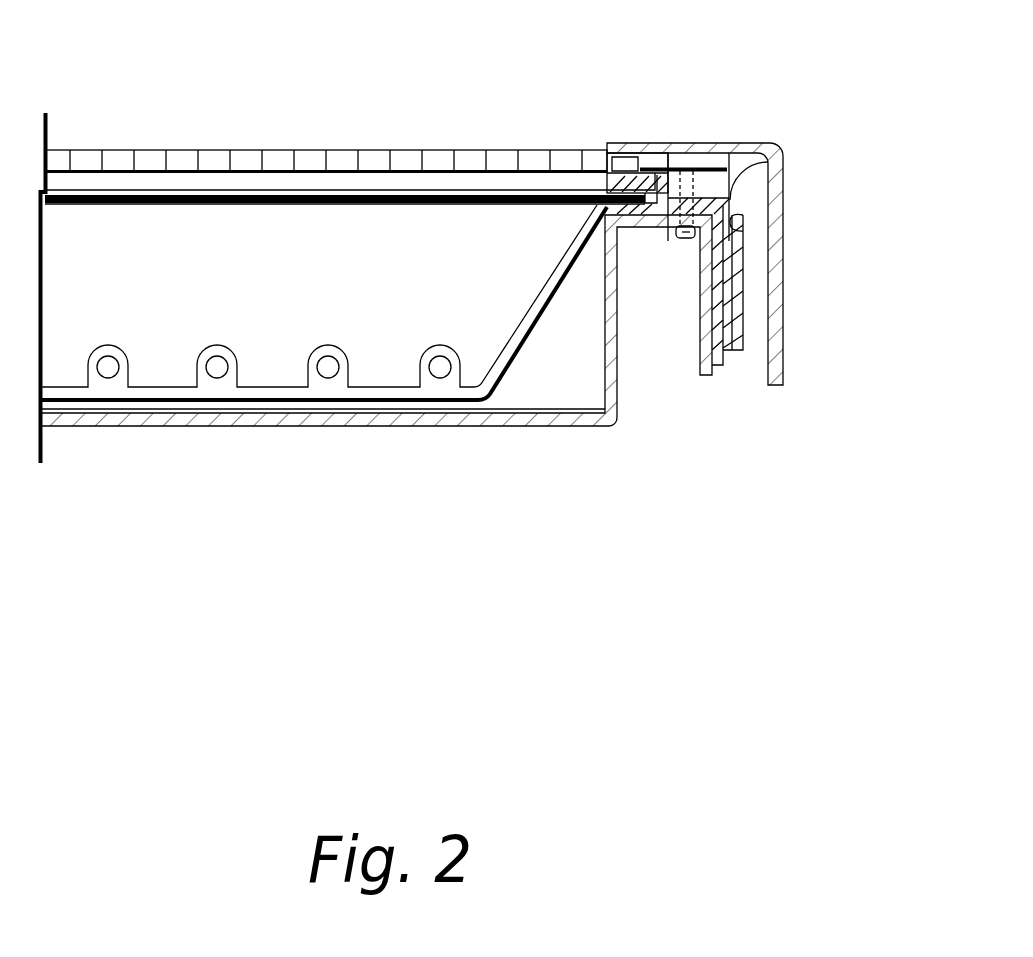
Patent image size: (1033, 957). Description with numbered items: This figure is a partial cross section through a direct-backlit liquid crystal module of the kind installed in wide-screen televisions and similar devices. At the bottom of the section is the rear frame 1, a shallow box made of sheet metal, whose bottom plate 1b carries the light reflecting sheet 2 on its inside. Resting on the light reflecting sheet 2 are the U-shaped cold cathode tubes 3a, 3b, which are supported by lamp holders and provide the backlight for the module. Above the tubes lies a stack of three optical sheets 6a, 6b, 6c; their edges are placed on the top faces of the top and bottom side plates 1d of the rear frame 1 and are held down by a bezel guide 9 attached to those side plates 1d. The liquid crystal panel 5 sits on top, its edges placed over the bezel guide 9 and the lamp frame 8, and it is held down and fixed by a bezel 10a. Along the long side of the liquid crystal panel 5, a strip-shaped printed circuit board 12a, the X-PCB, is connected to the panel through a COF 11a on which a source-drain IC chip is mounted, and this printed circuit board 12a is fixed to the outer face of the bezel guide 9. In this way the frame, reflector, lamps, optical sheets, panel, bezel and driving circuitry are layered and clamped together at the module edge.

The rear frame 1 is at (377, 324).
The bottom plate 1b is at (538, 412).
The top and bottom side plates 1d is at (619, 343).
The light reflecting sheet 2 is at (400, 410).
The U-shaped cold cathode tube 3a is at (329, 405).
The U-shaped cold cathode tube 3b is at (217, 378).
The liquid crystal panel 5 is at (277, 150).
The optical sheet 6a is at (193, 205).
The optical sheet 6b is at (147, 190).
The optical sheet 6c is at (88, 190).
The lamp frame 8 is at (403, 237).
The bezel guide 9 is at (650, 175).
The bezel 10a is at (752, 143).
The COF (chip-on-film) 11a is at (745, 172).
The printed circuit board (X-PCB) 12a is at (743, 307).